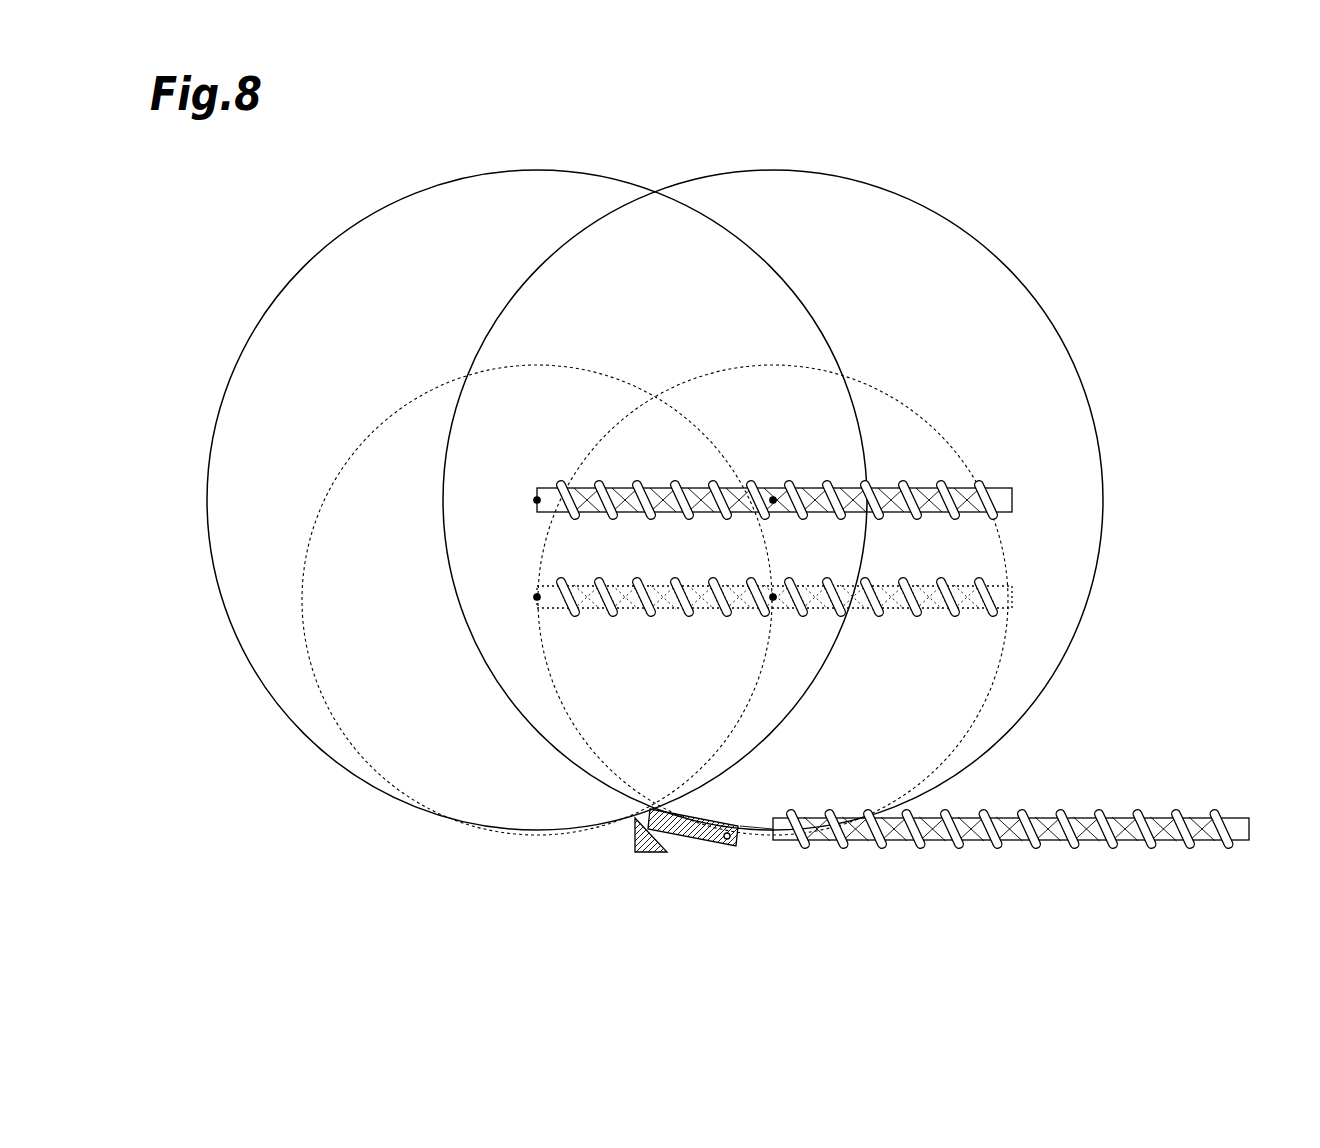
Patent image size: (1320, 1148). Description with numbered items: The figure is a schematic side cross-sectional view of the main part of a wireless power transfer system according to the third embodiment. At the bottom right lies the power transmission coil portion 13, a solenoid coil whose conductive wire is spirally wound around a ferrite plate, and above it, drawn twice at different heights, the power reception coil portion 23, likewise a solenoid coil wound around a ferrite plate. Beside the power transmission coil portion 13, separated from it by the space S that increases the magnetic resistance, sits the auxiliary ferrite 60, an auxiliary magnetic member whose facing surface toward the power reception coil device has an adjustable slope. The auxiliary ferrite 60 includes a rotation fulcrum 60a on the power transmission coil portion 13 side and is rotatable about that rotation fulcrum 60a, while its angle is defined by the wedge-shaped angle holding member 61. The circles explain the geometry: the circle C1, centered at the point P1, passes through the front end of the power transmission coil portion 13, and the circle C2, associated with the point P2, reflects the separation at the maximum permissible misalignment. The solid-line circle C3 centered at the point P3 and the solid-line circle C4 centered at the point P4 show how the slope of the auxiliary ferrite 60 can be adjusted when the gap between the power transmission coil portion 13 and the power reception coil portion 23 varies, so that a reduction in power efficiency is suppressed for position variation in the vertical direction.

The circle C4 is at (540, 170).
The circle C3 is at (772, 170).
The circle C2 is at (437, 384).
The circle C1 is at (884, 390).
The point P1 is at (774, 600).
The point P2 is at (533, 597).
The point P3 is at (773, 497).
The point P4 is at (533, 500).
The power reception coil portion 23 is at (1024, 498).
The power transmission coil portion 13 is at (1180, 849).
The auxiliary ferrite 60 is at (687, 842).
The rotation fulcrum 60a is at (728, 841).
The angle holding member 61 is at (633, 838).
The space S is at (757, 837).